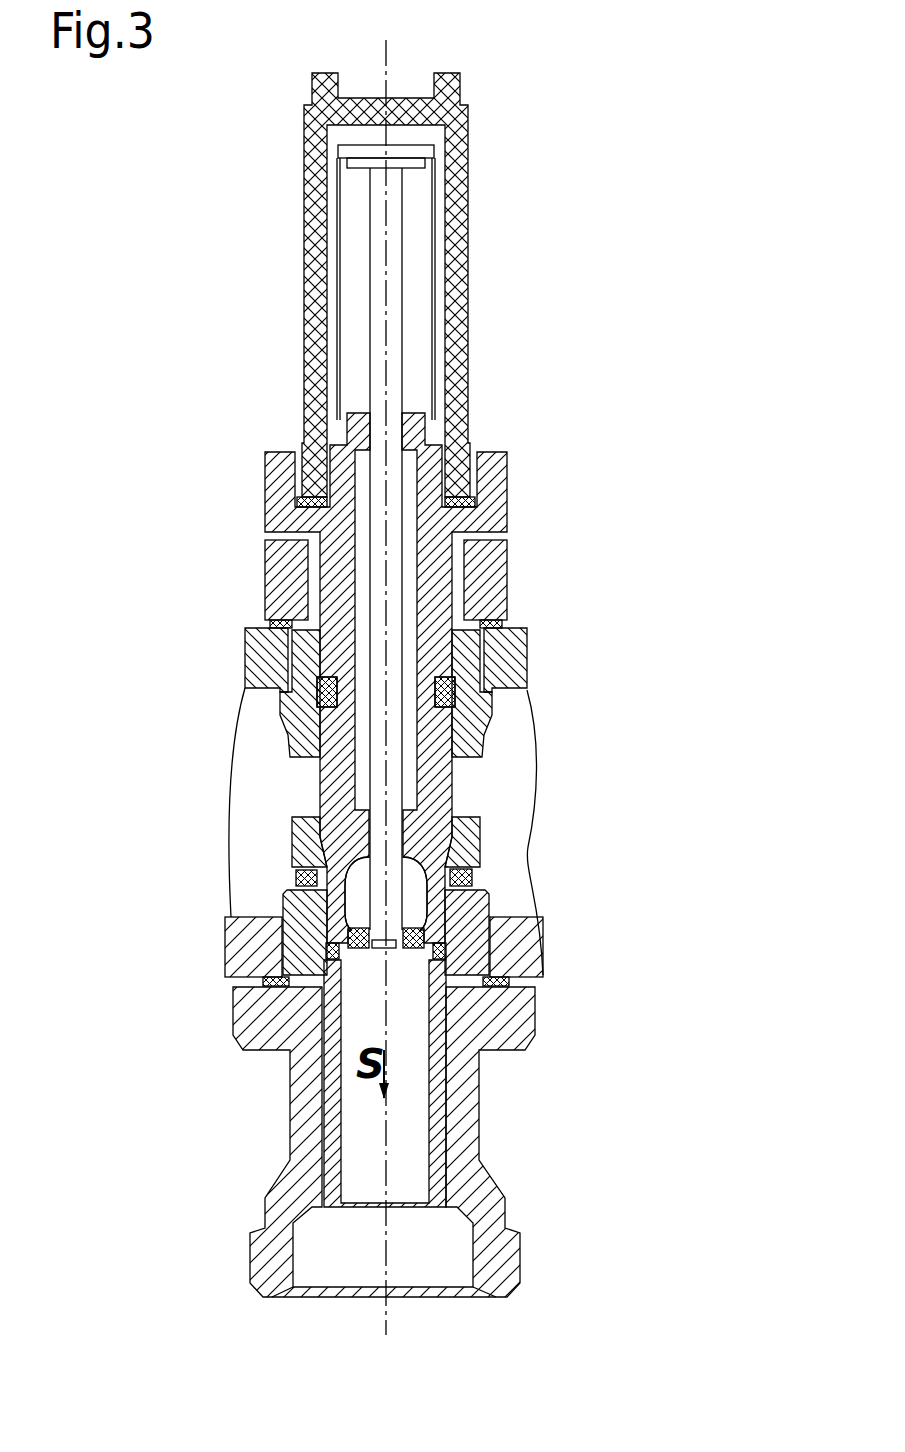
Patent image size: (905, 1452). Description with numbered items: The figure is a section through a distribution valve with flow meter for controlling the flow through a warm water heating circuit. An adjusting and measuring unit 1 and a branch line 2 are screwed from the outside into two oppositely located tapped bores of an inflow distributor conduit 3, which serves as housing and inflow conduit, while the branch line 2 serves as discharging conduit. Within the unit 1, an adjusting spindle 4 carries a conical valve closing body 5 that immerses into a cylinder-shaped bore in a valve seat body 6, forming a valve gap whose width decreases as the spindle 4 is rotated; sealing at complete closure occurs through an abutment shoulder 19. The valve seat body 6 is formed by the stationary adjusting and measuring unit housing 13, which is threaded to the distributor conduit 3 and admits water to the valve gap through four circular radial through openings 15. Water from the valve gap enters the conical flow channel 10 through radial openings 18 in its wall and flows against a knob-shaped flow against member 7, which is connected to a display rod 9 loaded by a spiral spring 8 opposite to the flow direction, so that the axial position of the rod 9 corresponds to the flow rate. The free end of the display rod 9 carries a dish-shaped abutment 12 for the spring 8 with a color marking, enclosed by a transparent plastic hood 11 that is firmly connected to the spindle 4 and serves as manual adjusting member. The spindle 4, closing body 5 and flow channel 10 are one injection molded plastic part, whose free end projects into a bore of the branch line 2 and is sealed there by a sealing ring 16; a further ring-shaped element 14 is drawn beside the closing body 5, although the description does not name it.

The adjusting and measuring unit 1 is at (195, 515).
The branch line 2 is at (305, 1110).
The inflow distributor conduit 3 is at (505, 665).
The adjusting spindle 4 is at (460, 582).
The valve closing body 5 is at (445, 869).
The valve seat body 6 is at (470, 841).
The flow against member 7 is at (412, 938).
The spiral spring 8 is at (337, 327).
The display rod 9 is at (394, 333).
The flow channel 10 is at (410, 1152).
The transparent plastic hood 11 is at (460, 151).
The dish-shaped abutment 12 is at (355, 148).
The adjusting and measuring unit housing 13 is at (290, 582).
The sealing ring 14 is at (305, 877).
The radial through openings 15 is at (298, 778).
The sealing ring 16 is at (325, 953).
The radial openings 18 is at (340, 905).
The abutment shoulder 19 is at (308, 830).